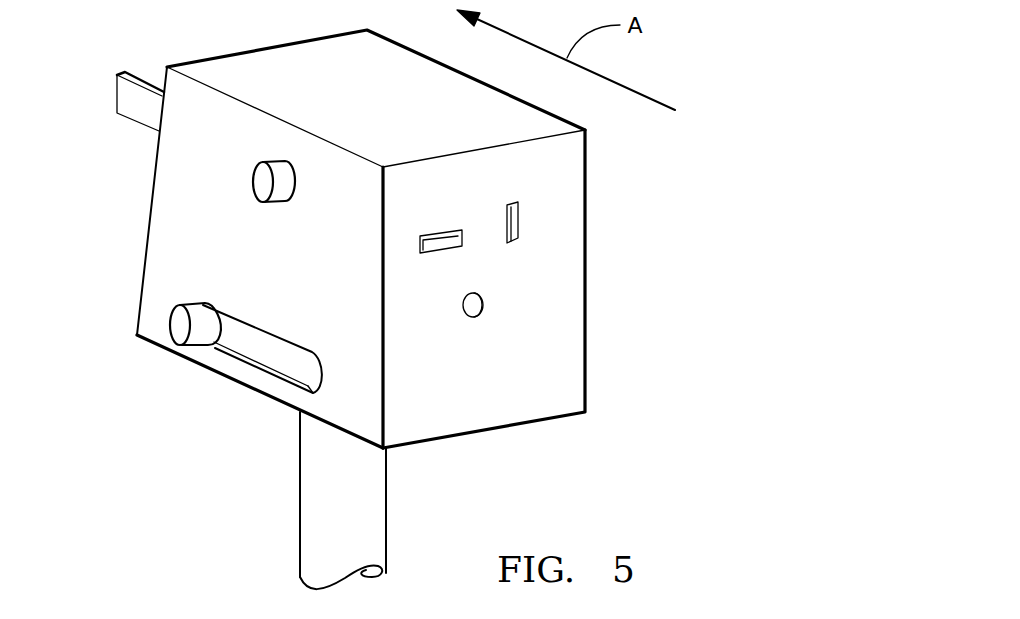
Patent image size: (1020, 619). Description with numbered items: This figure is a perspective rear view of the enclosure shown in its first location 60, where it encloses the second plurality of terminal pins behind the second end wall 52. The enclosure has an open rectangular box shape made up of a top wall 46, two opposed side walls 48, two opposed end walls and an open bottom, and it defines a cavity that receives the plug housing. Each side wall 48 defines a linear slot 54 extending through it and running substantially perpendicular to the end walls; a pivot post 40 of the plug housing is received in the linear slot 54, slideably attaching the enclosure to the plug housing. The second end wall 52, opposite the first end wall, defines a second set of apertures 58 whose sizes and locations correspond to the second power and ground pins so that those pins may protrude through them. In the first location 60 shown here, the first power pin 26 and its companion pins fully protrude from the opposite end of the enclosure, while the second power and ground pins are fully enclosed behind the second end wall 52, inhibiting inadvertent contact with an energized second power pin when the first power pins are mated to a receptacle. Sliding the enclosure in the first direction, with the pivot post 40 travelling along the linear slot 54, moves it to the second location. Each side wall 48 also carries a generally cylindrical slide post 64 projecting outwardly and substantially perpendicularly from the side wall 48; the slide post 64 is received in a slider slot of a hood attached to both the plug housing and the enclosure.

The first power pin 26 is at (143, 110).
The pivot post 40 is at (203, 328).
The top wall 46 is at (290, 55).
The side wall 48 is at (167, 245).
The second end wall 52 is at (503, 400).
The linear slot 54 is at (297, 368).
The second set of apertures 58 is at (443, 242).
The first location 60 is at (178, 327).
The slide post 64 is at (258, 182).